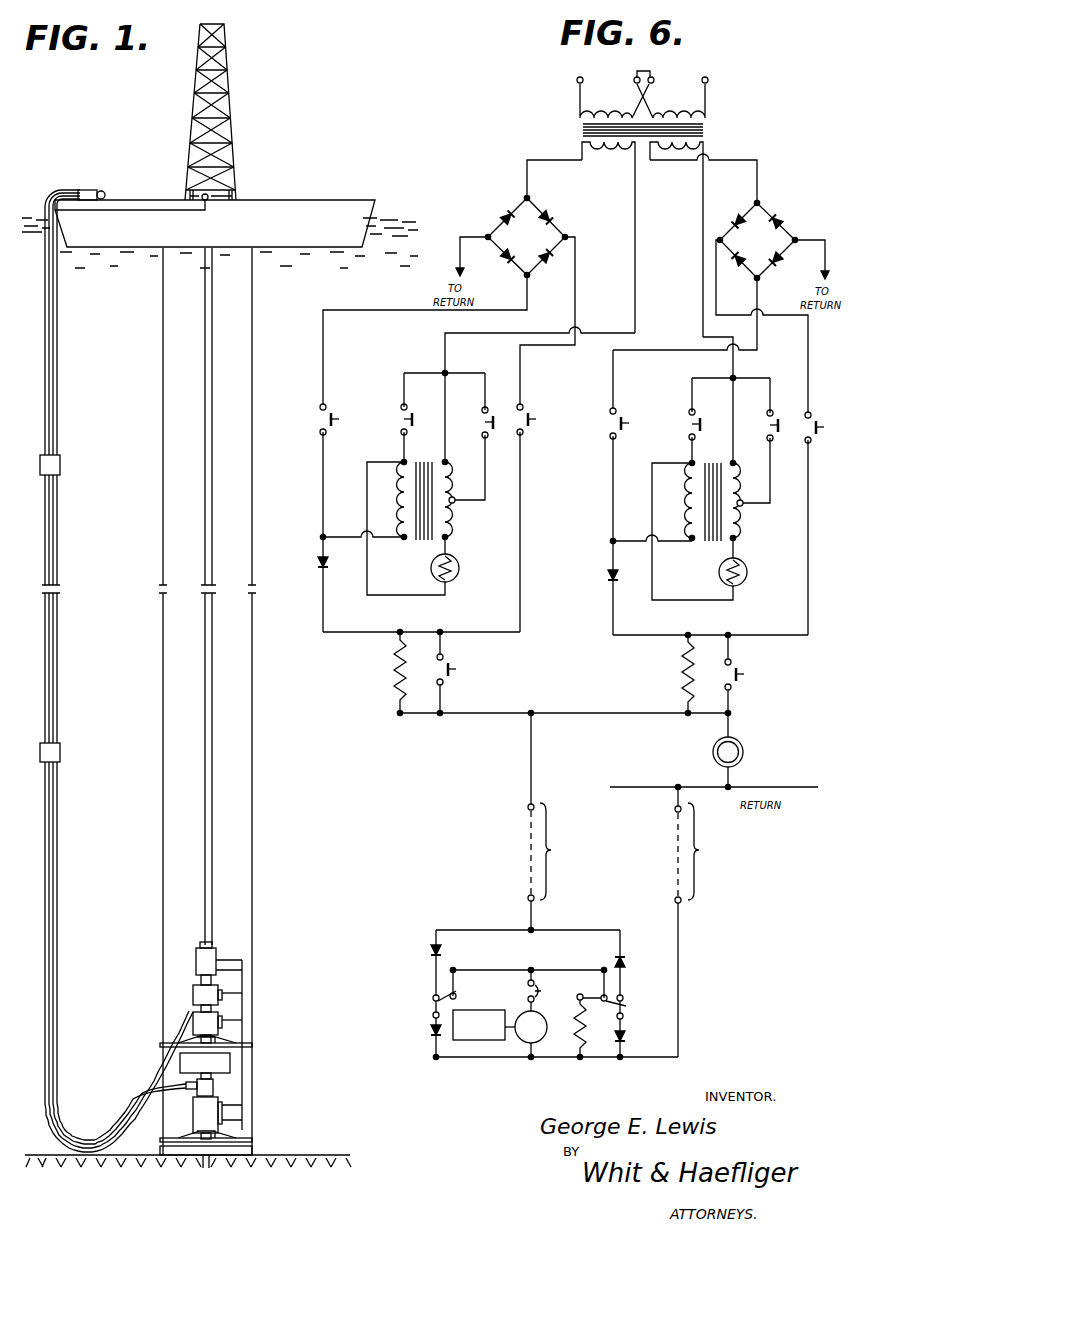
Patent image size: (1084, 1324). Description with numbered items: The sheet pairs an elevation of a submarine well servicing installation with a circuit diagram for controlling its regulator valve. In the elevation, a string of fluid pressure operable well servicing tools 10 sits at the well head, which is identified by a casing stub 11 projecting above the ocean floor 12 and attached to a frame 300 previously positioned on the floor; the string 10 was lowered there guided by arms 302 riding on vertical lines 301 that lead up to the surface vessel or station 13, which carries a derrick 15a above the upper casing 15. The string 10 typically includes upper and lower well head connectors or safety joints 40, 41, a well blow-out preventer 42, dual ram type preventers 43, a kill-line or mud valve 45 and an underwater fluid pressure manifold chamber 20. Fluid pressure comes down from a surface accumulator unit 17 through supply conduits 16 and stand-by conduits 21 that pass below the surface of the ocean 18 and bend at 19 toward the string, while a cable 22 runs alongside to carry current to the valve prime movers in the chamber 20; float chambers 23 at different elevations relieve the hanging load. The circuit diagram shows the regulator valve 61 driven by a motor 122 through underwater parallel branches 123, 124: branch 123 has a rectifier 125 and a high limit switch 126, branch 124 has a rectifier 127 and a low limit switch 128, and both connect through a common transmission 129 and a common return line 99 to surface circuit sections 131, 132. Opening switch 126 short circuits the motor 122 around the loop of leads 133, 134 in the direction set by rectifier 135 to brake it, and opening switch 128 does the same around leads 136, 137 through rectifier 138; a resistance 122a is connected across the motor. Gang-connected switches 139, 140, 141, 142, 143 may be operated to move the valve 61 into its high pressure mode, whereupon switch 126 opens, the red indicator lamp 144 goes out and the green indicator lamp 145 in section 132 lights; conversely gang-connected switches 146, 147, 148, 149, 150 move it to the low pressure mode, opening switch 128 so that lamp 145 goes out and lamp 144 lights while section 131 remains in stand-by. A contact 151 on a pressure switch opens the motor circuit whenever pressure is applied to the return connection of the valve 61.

In FIG. 1, the derrick 15a is at (236, 82).
In FIG. 1, the station 13 is at (195, 195).
In FIG. 1, the surface accumulator unit 17 is at (88, 190).
In FIG. 1, the ocean 18 is at (220, 264).
In FIG. 1, the supply conduits 16 is at (50, 352).
In FIG. 1, the stand-by conduits 21 is at (86, 628).
In FIG. 1, the cable 22 is at (59, 408).
In FIG. 1, the float chambers 23 is at (60, 470).
In FIG. 1, the vertical lines 301 is at (163, 798).
In FIG. 1, the upper casing 15 is at (212, 695).
In FIG. 1, the upper well head connector 40 is at (196, 958).
In FIG. 1, the tool string 10 is at (186, 988).
In FIG. 1, the manifold chamber 20 is at (193, 998).
In FIG. 1, the well blow-out preventer 42 is at (218, 1025).
In FIG. 1, the arms 302 is at (238, 1042).
In FIG. 1, the dual ram type preventers 43 is at (222, 1063).
In FIG. 1, the kill-line or mud valve 45 is at (186, 1085).
In FIG. 1, the lower well head connector 41 is at (218, 1108).
In FIG. 1, the frame 300 is at (253, 1150).
In FIG. 1, the bend 19 is at (95, 1141).
In FIG. 1, the ocean floor 12 is at (48, 1157).
In FIG. 1, the casing stub 11 is at (206, 1168).
In FIG. 6, the switch 139 is at (331, 413).
In FIG. 6, the switch 140 is at (403, 428).
In FIG. 6, the switch 141 is at (482, 436).
In FIG. 6, the switch 142 is at (528, 414).
In FIG. 6, the red indicator lamp 144 is at (459, 570).
In FIG. 6, the switch 146 is at (621, 416).
In FIG. 6, the switch 147 is at (691, 429).
In FIG. 6, the switch 148 is at (768, 438).
In FIG. 6, the switch 149 is at (814, 439).
In FIG. 6, the green indicator lamp 145 is at (747, 574).
In FIG. 6, the switch 150 is at (448, 672).
In FIG. 6, the switch 143 is at (724, 680).
In FIG. 6, the surface circuit section 131 is at (349, 684).
In FIG. 6, the surface circuit section 132 is at (757, 697).
In FIG. 6, the common transmission 129 is at (559, 821).
In FIG. 6, the common return line 99 is at (702, 851).
In FIG. 6, the parallel branch 123 is at (472, 920).
In FIG. 6, the parallel branch 124 is at (592, 920).
In FIG. 6, the rectifier 125 is at (431, 949).
In FIG. 6, the high limit switch 126 is at (433, 999).
In FIG. 6, the rectifier 135 is at (433, 1025).
In FIG. 6, the lead 134 is at (436, 1058).
In FIG. 6, the lead 133 is at (476, 968).
In FIG. 6, the lead 137 is at (550, 968).
In FIG. 6, the contact 151 is at (527, 991).
In FIG. 6, the resistance 122a is at (574, 1012).
In FIG. 6, the regulator valve 61 is at (477, 1040).
In FIG. 6, the motor 122 is at (535, 1043).
In FIG. 6, the rectifier 127 is at (626, 966).
In FIG. 6, the low limit switch 128 is at (626, 1003).
In FIG. 6, the rectifier 138 is at (626, 1040).
In FIG. 6, the lead 136 is at (598, 1058).